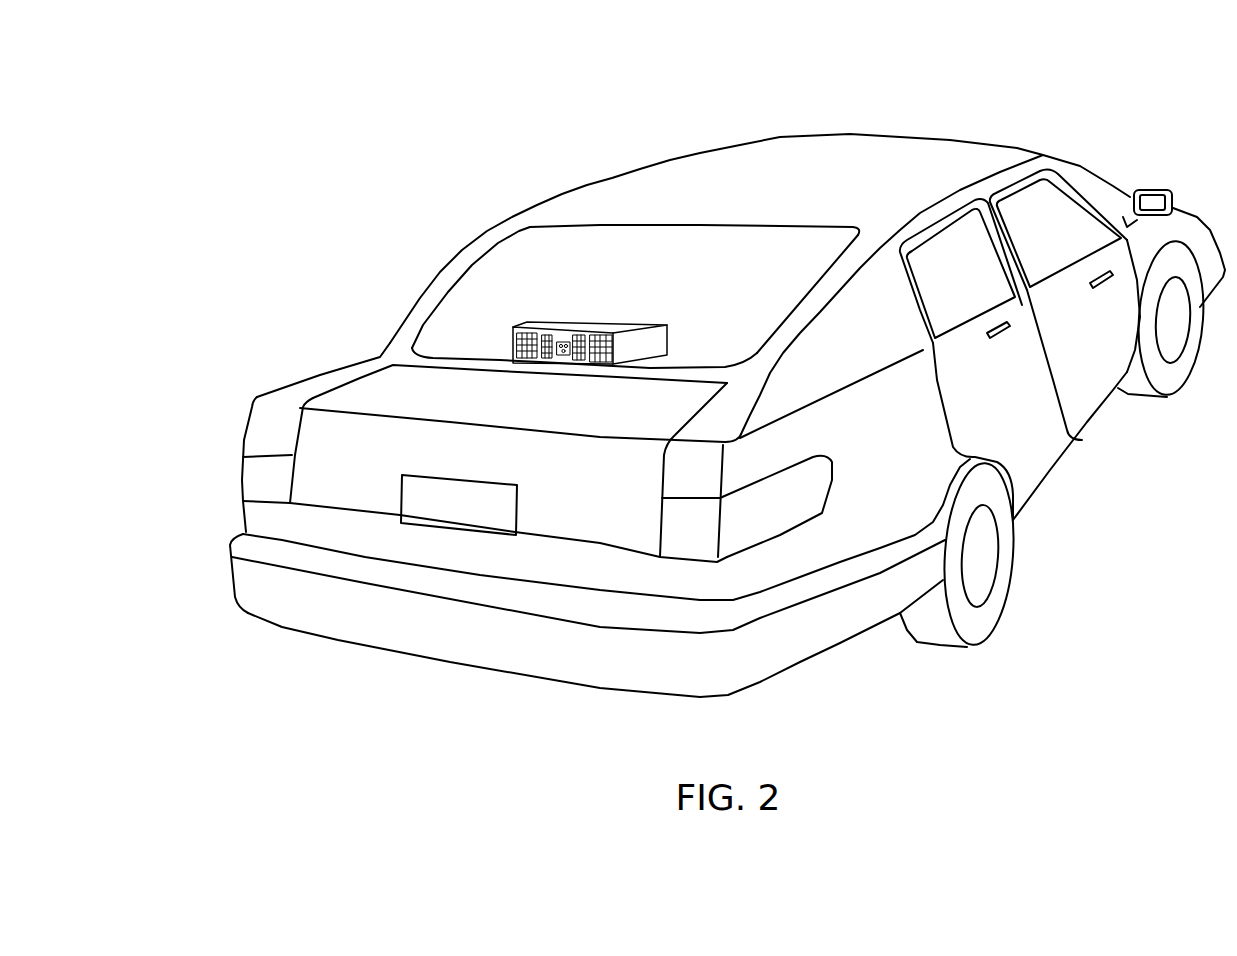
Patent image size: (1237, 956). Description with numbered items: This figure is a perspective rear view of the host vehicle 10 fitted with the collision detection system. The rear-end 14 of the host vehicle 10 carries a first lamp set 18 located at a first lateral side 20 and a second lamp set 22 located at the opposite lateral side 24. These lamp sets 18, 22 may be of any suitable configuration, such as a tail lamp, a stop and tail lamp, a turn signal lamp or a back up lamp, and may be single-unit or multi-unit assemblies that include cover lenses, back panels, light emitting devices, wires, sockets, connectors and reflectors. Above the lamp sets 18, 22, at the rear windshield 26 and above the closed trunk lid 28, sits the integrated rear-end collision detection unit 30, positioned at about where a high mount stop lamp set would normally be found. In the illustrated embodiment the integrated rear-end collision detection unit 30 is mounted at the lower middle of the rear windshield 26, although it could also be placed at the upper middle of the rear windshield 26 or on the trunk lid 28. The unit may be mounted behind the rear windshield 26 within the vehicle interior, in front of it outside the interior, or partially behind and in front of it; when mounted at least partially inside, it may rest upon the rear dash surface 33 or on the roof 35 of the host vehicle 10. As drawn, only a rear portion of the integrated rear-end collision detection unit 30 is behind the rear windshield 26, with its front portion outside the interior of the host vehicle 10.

The host vehicle 10 is at (268, 142).
The rear-end 14 is at (621, 590).
The first lamp set 18 is at (267, 437).
The first lateral side 20 is at (278, 356).
The second lamp set 22 is at (793, 493).
The opposite lateral side 24 is at (1166, 447).
The rear windshield 26 is at (493, 278).
The trunk lid 28 is at (407, 387).
The integrated rear-end collision detection unit 30 is at (580, 327).
The rear dash surface 33 is at (693, 367).
The roof 35 is at (665, 226).